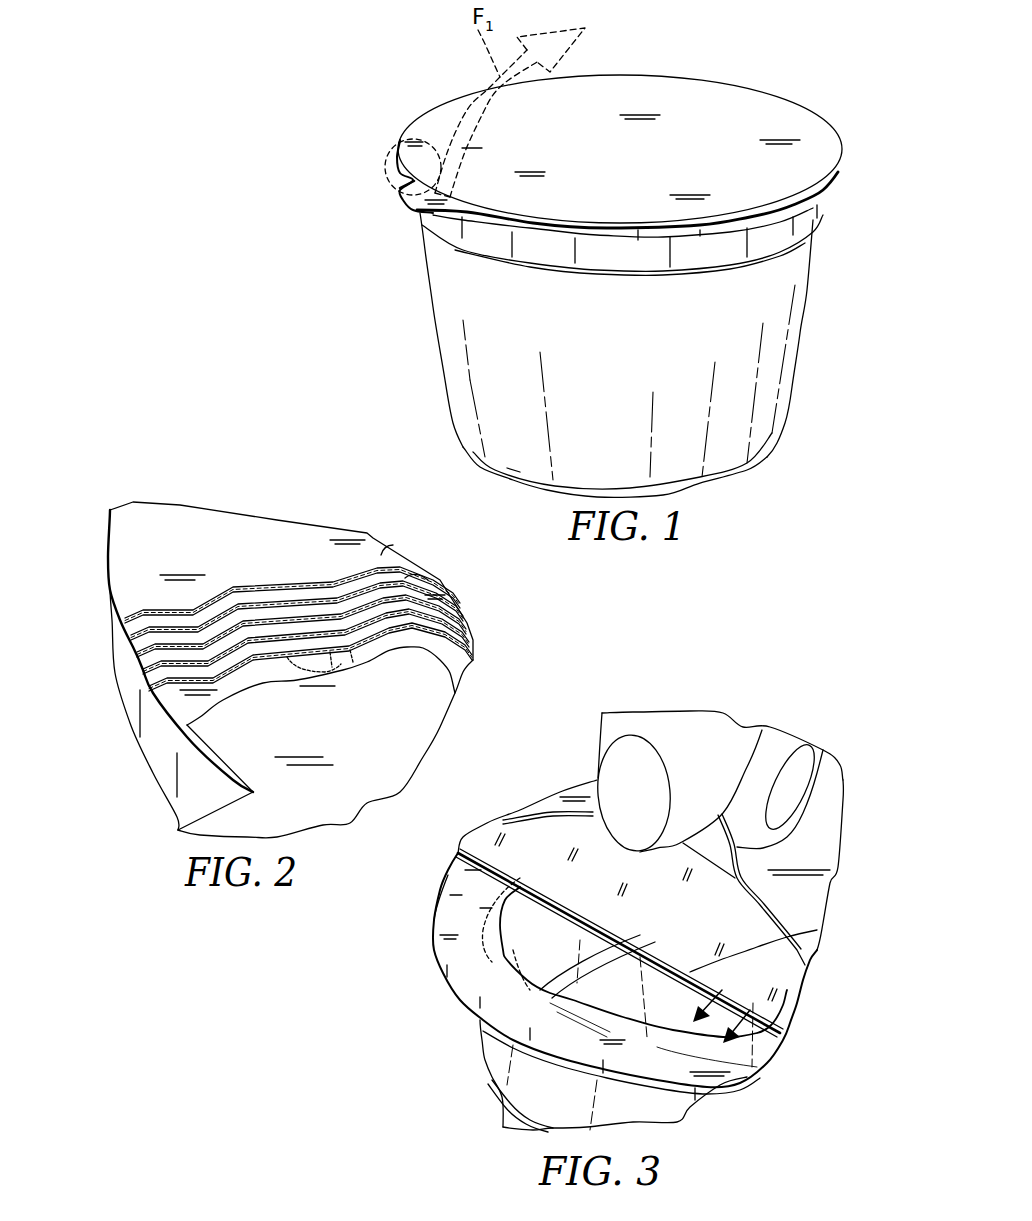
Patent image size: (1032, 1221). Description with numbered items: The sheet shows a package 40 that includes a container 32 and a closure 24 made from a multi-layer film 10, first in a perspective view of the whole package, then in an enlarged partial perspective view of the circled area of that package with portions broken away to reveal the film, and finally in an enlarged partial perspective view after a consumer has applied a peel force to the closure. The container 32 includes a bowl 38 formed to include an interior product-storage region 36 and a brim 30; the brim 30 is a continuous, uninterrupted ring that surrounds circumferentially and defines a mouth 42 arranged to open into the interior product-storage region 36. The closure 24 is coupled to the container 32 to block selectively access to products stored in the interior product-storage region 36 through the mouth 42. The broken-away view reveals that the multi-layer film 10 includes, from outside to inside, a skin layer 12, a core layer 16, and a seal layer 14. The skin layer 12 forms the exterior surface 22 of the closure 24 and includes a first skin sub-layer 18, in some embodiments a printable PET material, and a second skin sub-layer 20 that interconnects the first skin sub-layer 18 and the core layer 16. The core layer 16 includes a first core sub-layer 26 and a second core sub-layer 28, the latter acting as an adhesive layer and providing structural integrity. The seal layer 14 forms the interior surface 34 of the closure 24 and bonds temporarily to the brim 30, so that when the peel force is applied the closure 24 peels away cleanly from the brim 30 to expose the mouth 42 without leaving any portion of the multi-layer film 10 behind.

In FIG. 1, the multi-layer film 10 is at (696, 107).
In FIG. 3, the multi-layer film 10 is at (803, 855).
In FIG. 2, the skin layer 12 is at (412, 578).
In FIG. 2, the seal layer 14 is at (475, 645).
In FIG. 2, the core layer 16 is at (336, 615).
In FIG. 2, the first skin sub-layer 18 is at (381, 555).
In FIG. 2, the second skin sub-layer 20 is at (451, 576).
In FIG. 2, the exterior surface 22 is at (302, 552).
In FIG. 1, the closure 24 is at (760, 105).
In FIG. 2, the closure 24 is at (183, 544).
In FIG. 3, the closure 24 is at (833, 800).
In FIG. 2, the first core sub-layer 26 is at (469, 594).
In FIG. 2, the second core sub-layer 28 is at (471, 632).
In FIG. 2, the brim 30 is at (116, 637).
In FIG. 3, the brim 30 is at (455, 903).
In FIG. 1, the container 32 is at (763, 307).
In FIG. 3, the container 32 is at (788, 947).
In FIG. 3, the interior surface 34 is at (790, 1013).
In FIG. 2, the interior product-storage region 36 is at (388, 657).
In FIG. 1, the bowl 38 is at (767, 392).
In FIG. 3, the bowl 38 is at (510, 1112).
In FIG. 1, the package 40 is at (328, 92).
In FIG. 3, the mouth 42 is at (450, 871).